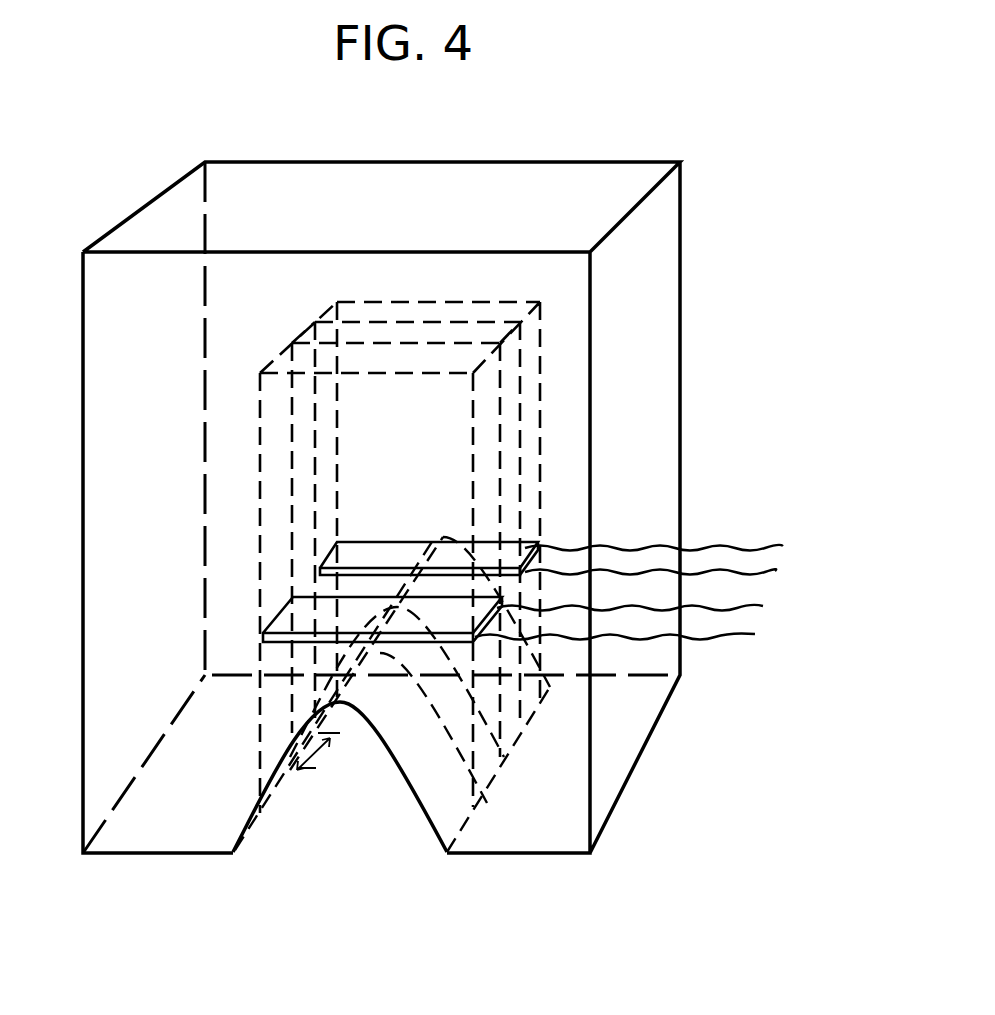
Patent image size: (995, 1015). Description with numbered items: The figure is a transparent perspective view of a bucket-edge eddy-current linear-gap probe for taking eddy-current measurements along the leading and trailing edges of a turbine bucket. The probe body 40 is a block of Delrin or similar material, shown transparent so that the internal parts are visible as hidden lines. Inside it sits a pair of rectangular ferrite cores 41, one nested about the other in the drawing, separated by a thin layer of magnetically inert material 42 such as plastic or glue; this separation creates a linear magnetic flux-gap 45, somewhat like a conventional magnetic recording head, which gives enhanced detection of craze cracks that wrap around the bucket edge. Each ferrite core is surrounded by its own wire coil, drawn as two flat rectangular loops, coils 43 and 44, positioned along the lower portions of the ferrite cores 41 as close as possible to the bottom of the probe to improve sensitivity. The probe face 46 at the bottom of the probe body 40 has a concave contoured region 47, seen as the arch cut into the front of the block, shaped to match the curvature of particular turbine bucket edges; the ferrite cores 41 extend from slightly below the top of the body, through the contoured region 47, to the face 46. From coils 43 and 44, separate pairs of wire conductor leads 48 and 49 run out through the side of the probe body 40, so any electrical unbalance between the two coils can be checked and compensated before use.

The probe body 40 is at (562, 162).
The rectangular ferrite cores 41 is at (334, 306).
The thin layer of magnetically inert material 42 is at (443, 328).
The wire coil 43 is at (360, 545).
The wire coil 44 is at (275, 615).
The linear magnetic flux-gap 45 is at (327, 750).
The probe face 46 is at (462, 855).
The concave contoured region 47 is at (407, 787).
The wire conductor leads 48 is at (714, 565).
The wire conductor leads 49 is at (707, 610).